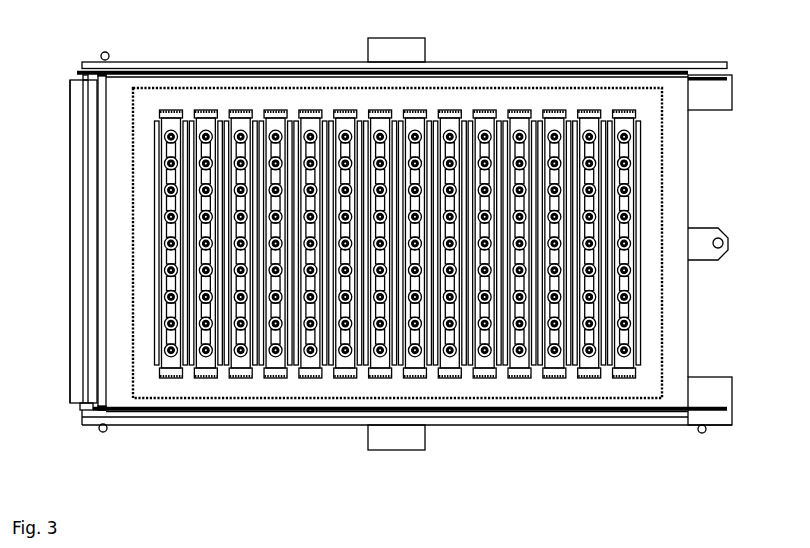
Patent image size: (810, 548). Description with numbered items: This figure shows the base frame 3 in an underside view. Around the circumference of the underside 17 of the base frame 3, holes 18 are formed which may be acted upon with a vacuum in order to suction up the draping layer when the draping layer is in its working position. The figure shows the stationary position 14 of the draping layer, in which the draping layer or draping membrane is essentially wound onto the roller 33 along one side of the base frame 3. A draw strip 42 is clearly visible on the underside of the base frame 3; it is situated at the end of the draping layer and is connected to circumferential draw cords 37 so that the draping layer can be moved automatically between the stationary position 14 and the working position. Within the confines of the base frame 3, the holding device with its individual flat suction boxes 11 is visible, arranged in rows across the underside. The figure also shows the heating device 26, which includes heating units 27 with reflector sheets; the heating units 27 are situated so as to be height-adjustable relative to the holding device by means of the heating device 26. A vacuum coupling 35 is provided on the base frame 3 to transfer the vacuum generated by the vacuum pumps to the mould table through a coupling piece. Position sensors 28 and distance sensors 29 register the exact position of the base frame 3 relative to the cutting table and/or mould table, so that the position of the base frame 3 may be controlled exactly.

The base frame 3 is at (706, 55).
The flat suction box 11 is at (177, 108).
The stationary position 14 is at (65, 122).
The underside 17 is at (633, 417).
The holes 18 is at (240, 400).
The heating device 26 is at (150, 121).
The heating units 27 is at (260, 123).
The position sensors 28 is at (421, 46).
The distance sensors 29 is at (713, 433).
The roller 33 is at (63, 175).
The vacuum coupling 35 is at (723, 250).
The draw cords 37 is at (122, 413).
The draw strip 42 is at (98, 393).